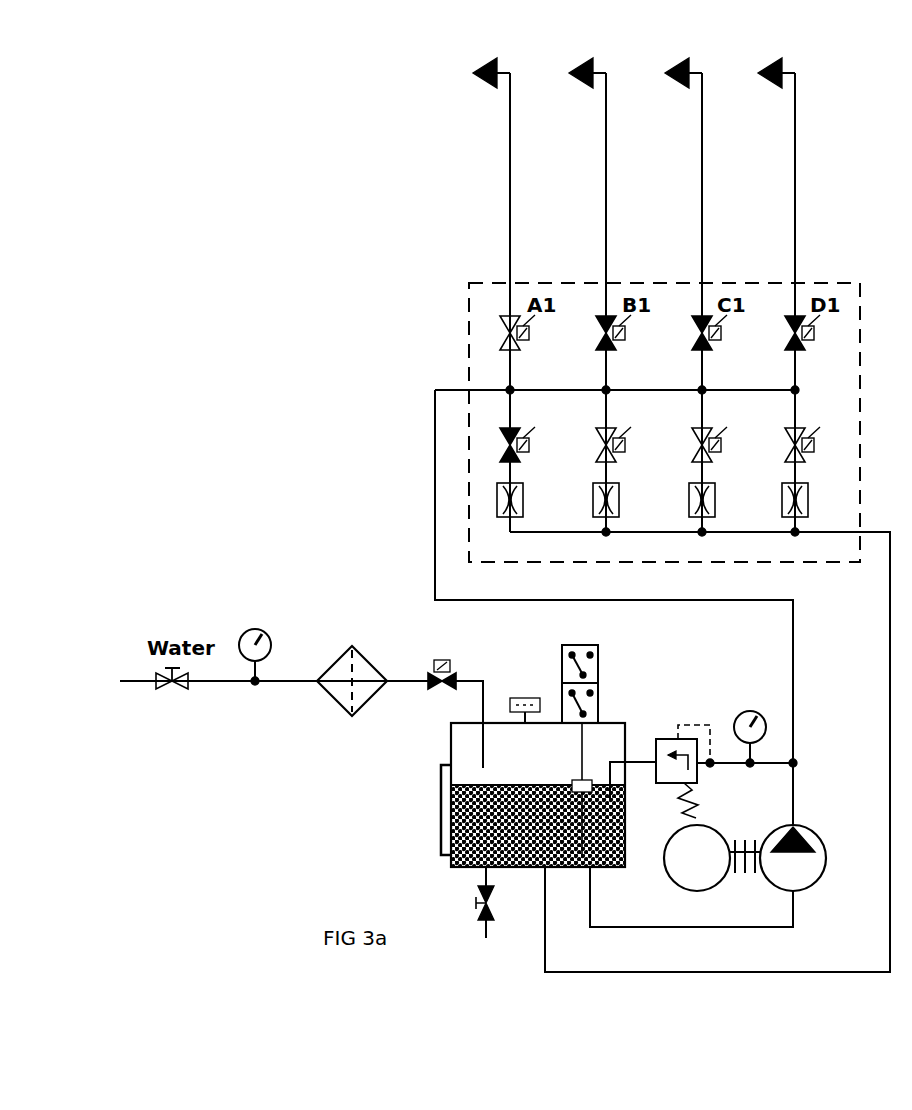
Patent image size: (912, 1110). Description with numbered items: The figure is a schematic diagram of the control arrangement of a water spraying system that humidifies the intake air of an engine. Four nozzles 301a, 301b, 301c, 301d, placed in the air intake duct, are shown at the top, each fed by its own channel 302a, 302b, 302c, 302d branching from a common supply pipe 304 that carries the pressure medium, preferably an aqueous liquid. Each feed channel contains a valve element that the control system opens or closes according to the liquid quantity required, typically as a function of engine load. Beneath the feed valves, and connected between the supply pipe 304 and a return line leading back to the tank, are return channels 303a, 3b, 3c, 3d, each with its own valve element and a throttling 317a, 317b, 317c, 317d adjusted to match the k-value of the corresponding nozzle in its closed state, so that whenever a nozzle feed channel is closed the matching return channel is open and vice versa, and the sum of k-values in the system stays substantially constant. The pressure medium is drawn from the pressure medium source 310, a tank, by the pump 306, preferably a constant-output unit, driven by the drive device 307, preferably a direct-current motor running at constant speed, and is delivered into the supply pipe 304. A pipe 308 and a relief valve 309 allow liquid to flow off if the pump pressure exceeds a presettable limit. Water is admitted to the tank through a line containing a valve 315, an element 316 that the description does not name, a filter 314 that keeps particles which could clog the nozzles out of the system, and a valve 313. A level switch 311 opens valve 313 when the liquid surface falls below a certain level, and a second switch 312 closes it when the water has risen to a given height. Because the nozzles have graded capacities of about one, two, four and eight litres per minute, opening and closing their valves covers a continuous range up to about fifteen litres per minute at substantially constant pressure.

The nozzle 301a is at (492, 82).
The nozzle 301b is at (588, 82).
The nozzle 301c is at (684, 82).
The nozzle 301d is at (777, 82).
The channel 302a is at (510, 148).
The channel 302b is at (606, 148).
The channel 302c is at (702, 148).
The channel 302d is at (795, 153).
The return channel 303a is at (505, 477).
The return channel 3b is at (602, 477).
The return channel 3c is at (698, 477).
The return channel 3d is at (792, 470).
The supply pipe 304 is at (435, 562).
The pump 306 is at (823, 855).
The drive device 307 is at (692, 888).
The pipe 308 is at (727, 763).
The relief valve 309 is at (660, 740).
The pressure medium source 310 is at (448, 857).
The level switch 311 is at (598, 714).
The level switch 312 is at (562, 668).
The valve 313 is at (428, 692).
The filter 314 is at (340, 706).
The valve 315 is at (178, 690).
The pressure gauge 316 is at (284, 688).
The throttling 317a is at (497, 503).
The throttling 317b is at (593, 505).
The throttling 317c is at (689, 505).
The throttling 317d is at (782, 505).